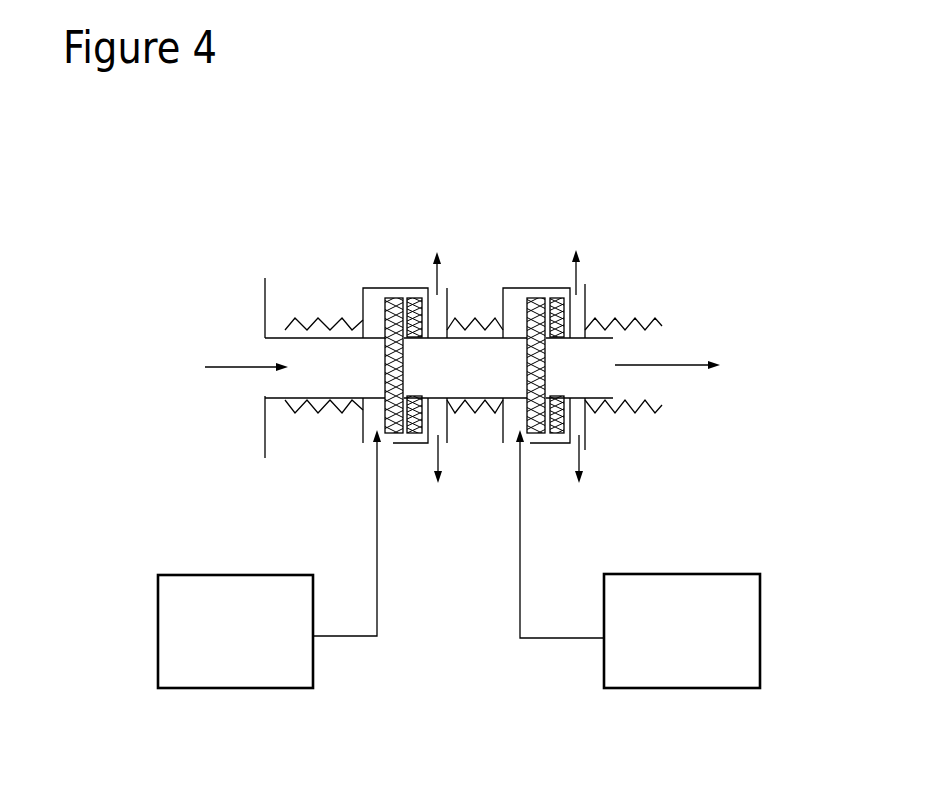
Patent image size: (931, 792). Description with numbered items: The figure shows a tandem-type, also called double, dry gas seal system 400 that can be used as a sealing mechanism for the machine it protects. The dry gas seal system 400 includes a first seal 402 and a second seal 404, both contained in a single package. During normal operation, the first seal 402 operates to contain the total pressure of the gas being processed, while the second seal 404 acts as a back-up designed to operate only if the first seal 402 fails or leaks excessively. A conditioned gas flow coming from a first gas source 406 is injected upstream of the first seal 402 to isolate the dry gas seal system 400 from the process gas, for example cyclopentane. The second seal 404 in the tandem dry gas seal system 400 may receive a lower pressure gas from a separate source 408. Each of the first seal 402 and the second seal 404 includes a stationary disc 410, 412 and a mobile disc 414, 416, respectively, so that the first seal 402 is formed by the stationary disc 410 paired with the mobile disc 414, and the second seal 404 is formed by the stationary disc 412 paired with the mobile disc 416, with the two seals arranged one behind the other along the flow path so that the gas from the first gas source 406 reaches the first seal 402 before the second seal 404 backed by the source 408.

The dry gas seal system 400 is at (311, 196).
The first seal 402 is at (375, 288).
The second seal 404 is at (527, 288).
The first gas source 406 is at (235, 575).
The source 408 is at (696, 574).
The stationary disc 410 is at (385, 317).
The stationary disc 412 is at (527, 317).
The mobile disc 414 is at (414, 433).
The mobile disc 416 is at (555, 433).